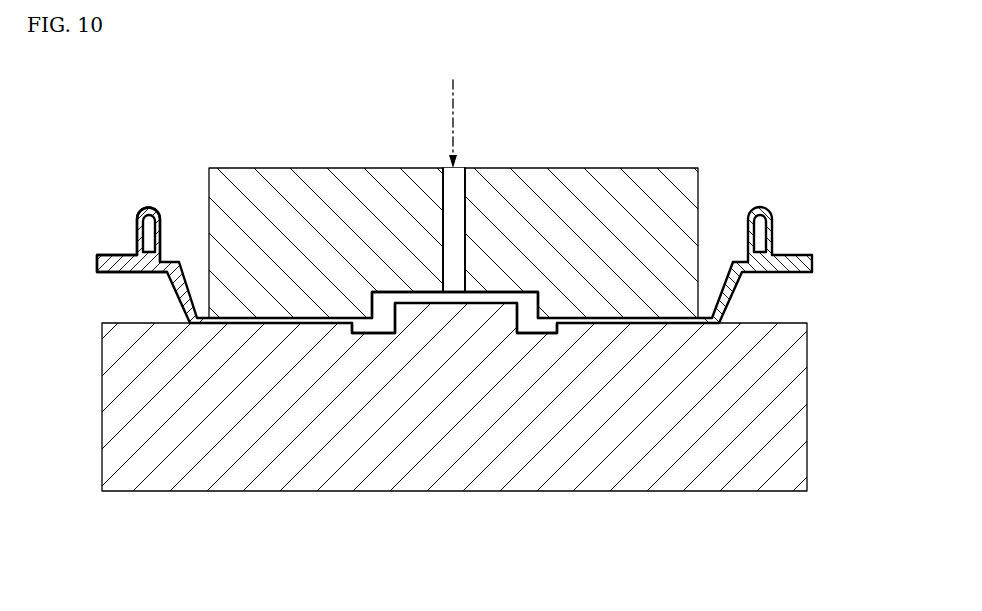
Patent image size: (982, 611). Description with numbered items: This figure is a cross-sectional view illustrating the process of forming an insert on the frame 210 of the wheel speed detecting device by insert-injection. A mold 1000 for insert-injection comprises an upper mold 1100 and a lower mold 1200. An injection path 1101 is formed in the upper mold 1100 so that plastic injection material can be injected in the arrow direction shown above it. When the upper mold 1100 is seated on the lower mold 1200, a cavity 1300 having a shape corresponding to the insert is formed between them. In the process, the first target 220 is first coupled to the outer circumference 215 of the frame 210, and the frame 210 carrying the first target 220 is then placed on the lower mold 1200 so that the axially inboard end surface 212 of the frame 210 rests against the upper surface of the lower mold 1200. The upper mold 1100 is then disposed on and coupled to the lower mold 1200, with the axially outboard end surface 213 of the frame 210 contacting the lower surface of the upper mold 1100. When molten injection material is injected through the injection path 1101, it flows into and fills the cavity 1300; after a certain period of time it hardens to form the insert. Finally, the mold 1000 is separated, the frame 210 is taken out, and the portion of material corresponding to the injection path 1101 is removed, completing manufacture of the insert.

The mold 1000 is at (667, 130).
The upper mold 1100 is at (605, 183).
The injection path 1101 is at (455, 187).
The lower mold 1200 is at (640, 477).
The cavity 1300 is at (381, 300).
The frame 210 is at (147, 195).
The axially inboard end surface 212 is at (703, 346).
The axially outboard end surface 213 is at (694, 301).
The outer circumference 215 is at (162, 238).
The first target 220 is at (110, 290).